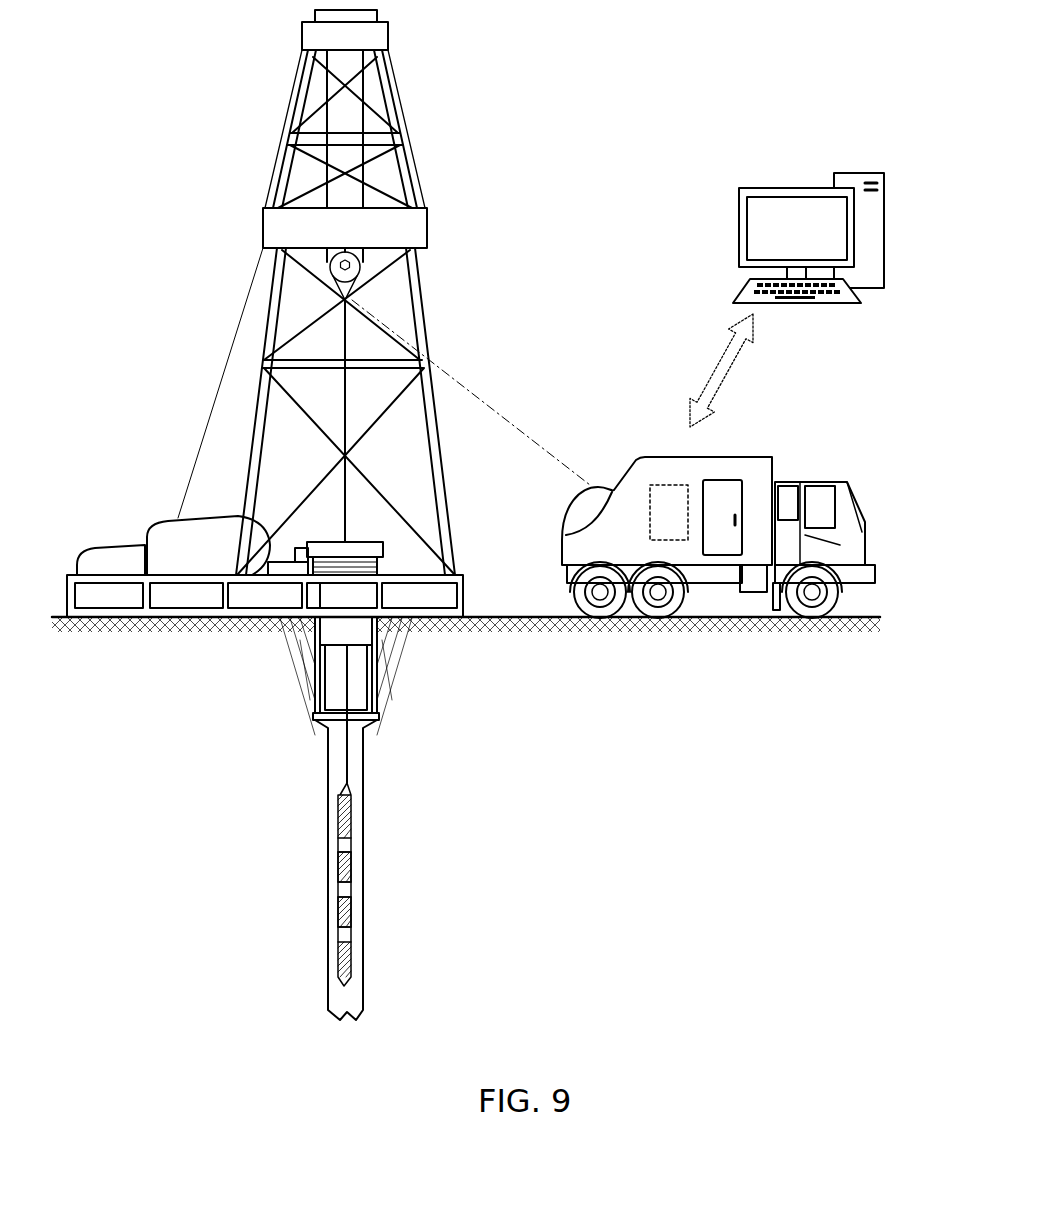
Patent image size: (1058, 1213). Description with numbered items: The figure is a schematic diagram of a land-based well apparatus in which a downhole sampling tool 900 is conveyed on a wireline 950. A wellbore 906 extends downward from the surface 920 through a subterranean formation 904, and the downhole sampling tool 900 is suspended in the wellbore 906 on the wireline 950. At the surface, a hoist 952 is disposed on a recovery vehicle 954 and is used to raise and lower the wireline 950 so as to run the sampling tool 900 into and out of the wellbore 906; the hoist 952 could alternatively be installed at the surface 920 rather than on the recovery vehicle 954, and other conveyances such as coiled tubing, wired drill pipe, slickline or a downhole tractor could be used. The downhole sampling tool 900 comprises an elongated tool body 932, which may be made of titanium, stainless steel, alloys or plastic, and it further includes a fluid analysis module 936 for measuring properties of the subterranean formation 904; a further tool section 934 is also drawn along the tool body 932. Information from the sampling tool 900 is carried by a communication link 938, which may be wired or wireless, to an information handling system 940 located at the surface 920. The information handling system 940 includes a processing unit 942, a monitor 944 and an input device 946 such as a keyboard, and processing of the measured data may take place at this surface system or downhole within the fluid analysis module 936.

The downhole sampling tool 900 is at (344, 884).
The subterranean formation 904 is at (460, 866).
The wellbore 906 is at (328, 787).
The surface 920 is at (490, 617).
The tool body 932 is at (338, 915).
The tool section 934 is at (352, 933).
The fluid analysis module 936 is at (340, 888).
The communication link 938 is at (720, 358).
The information handling system 940 is at (828, 220).
The processing unit 942 is at (884, 210).
The monitor 944 is at (737, 208).
The input device 946 is at (778, 304).
The wireline 950 is at (344, 737).
The hoist 952 is at (575, 497).
The recovery vehicle 954 is at (690, 519).